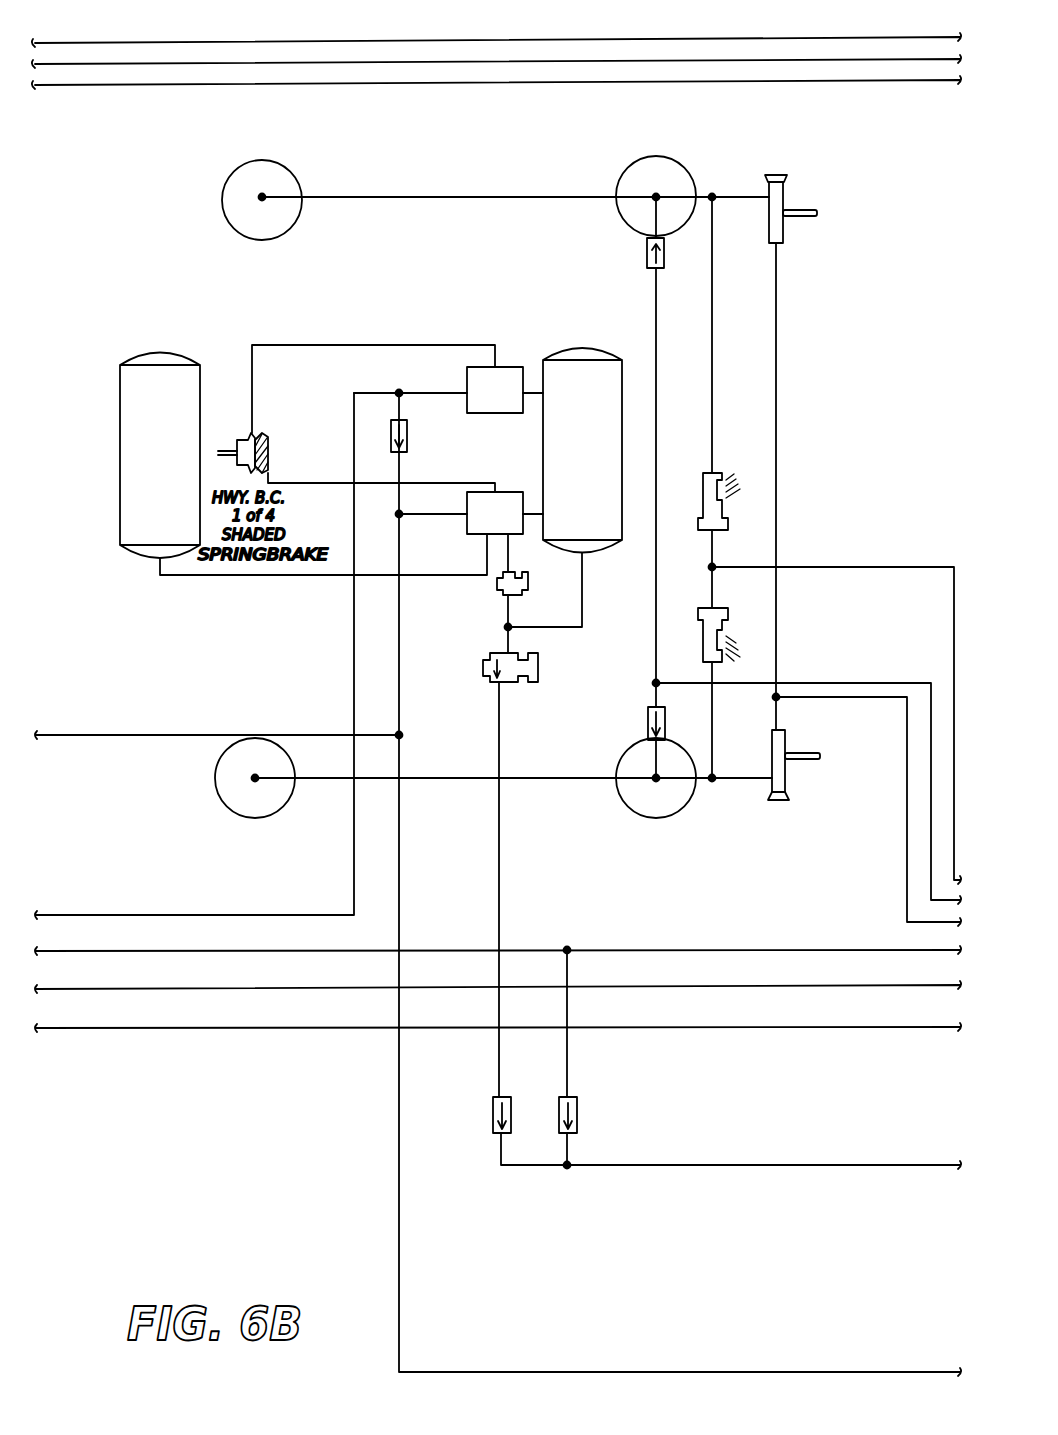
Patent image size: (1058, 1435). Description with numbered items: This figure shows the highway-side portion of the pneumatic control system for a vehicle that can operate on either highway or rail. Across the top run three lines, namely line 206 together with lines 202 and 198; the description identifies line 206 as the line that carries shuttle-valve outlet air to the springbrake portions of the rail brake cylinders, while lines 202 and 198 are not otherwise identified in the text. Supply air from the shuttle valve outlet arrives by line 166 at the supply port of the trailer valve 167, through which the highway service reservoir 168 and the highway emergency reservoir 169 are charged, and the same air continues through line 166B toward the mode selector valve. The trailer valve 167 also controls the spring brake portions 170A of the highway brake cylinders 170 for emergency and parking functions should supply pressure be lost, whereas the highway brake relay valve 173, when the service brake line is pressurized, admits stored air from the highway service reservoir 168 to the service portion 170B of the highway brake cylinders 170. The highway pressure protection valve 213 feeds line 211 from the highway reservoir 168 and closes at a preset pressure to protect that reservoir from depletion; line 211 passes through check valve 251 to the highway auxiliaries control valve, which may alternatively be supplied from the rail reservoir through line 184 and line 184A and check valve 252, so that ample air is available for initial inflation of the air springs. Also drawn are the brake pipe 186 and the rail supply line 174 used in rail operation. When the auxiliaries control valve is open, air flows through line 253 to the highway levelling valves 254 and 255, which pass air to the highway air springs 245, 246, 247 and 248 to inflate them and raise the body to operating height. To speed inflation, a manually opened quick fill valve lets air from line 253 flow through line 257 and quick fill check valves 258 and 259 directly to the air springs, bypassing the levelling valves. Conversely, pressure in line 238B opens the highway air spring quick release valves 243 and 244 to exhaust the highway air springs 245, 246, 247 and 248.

The air supply line 202 is at (320, 42).
The air supply line 198 is at (452, 62).
The line 206 is at (565, 82).
The highway air spring 248 is at (290, 170).
The highway air spring 247 is at (676, 158).
The quick fill check valve 259 is at (647, 253).
The highway levelling valve 255 is at (783, 232).
The highway emergency reservoir 169 is at (182, 352).
The highway brake cylinder 170 is at (349, 418).
The service portion 170B is at (245, 435).
The spring brake portion 170A is at (263, 433).
The highway brake relay valve 173 is at (496, 367).
The highway service reservoir 168 is at (598, 350).
The trailer valve 167 is at (497, 492).
The line 253 is at (778, 345).
The highway air spring quick release valve 244 is at (703, 492).
The highway air spring quick release valve 243 is at (703, 627).
The line 238B is at (893, 567).
The highway pressure protection valve 213 is at (538, 668).
The line 257 is at (820, 683).
The line 166 is at (172, 735).
The line 166B is at (400, 757).
The quick fill check valve 258 is at (648, 726).
The highway air spring 246 is at (283, 820).
The highway air spring 245 is at (663, 817).
The highway levelling valve 254 is at (780, 800).
The line 211 is at (501, 886).
The line 184 is at (465, 950).
The brake pipe 186 is at (600, 968).
The rail supply line 174 is at (600, 1006).
The line 184A is at (567, 1046).
The check valve 251 is at (493, 1115).
The check valve 252 is at (577, 1115).